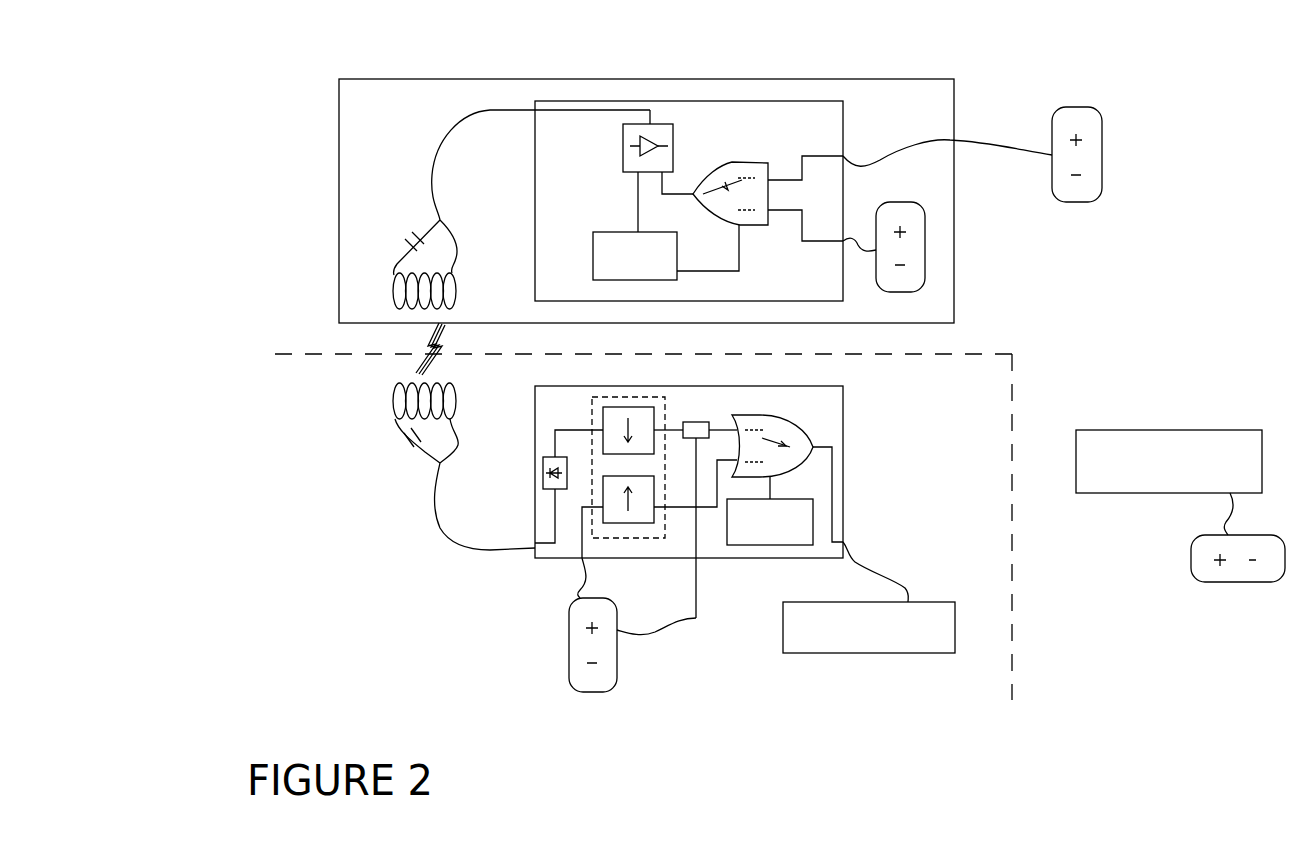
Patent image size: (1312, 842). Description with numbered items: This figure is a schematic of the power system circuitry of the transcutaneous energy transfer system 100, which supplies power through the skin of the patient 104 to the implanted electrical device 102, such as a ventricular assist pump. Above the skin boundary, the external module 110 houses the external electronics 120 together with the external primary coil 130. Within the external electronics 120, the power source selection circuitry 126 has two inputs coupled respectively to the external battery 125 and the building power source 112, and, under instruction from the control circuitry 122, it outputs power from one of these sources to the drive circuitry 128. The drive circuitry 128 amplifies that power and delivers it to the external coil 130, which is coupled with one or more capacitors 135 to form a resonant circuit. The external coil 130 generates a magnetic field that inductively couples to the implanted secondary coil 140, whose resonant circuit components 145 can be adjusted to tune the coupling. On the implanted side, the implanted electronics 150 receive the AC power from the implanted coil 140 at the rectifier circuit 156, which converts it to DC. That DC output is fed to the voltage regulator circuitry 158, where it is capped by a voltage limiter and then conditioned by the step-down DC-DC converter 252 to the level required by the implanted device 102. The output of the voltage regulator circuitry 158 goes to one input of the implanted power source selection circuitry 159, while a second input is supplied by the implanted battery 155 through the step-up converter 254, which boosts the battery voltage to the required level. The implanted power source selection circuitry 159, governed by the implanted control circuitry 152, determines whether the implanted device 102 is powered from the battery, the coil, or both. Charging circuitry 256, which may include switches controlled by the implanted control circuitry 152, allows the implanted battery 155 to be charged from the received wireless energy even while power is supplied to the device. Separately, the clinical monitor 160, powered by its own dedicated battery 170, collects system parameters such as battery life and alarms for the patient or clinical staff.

The transcutaneous energy transfer (TET) system 100 is at (755, 806).
The implanted electrical device 102 is at (920, 654).
The patient 104 is at (643, 527).
The external module 110 is at (357, 79).
The building power source 112 is at (1116, 130).
The external electronics 120 is at (570, 100).
The control circuitry 122 is at (582, 245).
The external battery 125 is at (930, 251).
The power source selection circuitry 126 is at (757, 230).
The drive circuitry 128 is at (620, 147).
The external primary coil 130 is at (387, 293).
The capacitor 135 is at (397, 233).
The implanted secondary coil 140 is at (388, 415).
The resonant circuit components 145 is at (404, 463).
The implanted electronics 150 is at (845, 412).
The implanted control circuitry 152 is at (757, 548).
The implanted battery 155 is at (563, 655).
The rectifier circuit 156 is at (537, 477).
The voltage regulator circuitry 158 is at (648, 540).
The implanted power source selection circuitry 159 is at (813, 460).
The clinical monitor 160 is at (1218, 425).
The battery 170 is at (1177, 558).
The step-down DC-DC converter 252 is at (624, 405).
The step-up converter 254 is at (620, 524).
The charging circuitry 256 is at (696, 420).